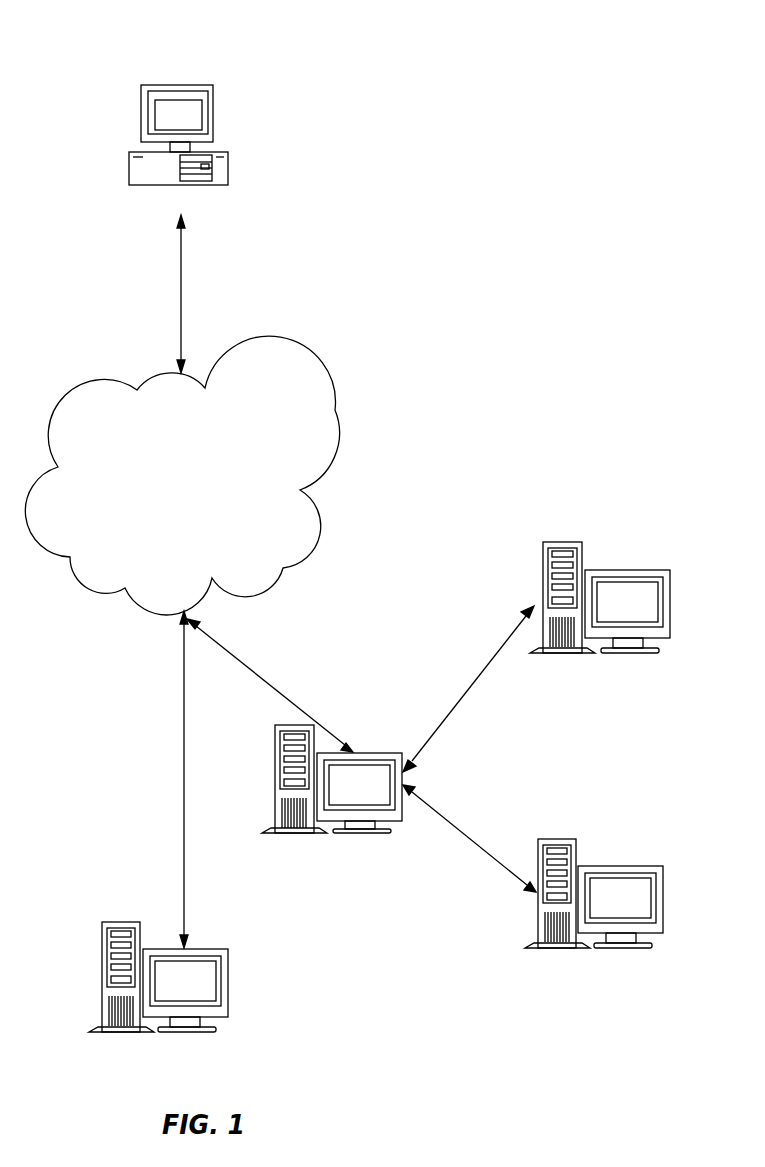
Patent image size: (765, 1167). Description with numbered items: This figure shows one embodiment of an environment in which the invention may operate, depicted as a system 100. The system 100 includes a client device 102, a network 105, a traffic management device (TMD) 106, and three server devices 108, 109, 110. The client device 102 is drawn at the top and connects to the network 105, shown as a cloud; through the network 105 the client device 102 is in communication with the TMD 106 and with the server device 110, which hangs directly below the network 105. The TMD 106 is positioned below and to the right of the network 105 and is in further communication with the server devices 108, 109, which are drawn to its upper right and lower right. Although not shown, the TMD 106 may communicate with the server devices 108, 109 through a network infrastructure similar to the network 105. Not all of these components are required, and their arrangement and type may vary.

The system 100 is at (385, 75).
The client device 102 is at (216, 112).
The network 105 is at (335, 410).
The traffic management device (TMD) 106 is at (350, 752).
The server device 108 is at (555, 541).
The server device 109 is at (548, 838).
The server device 110 is at (107, 921).